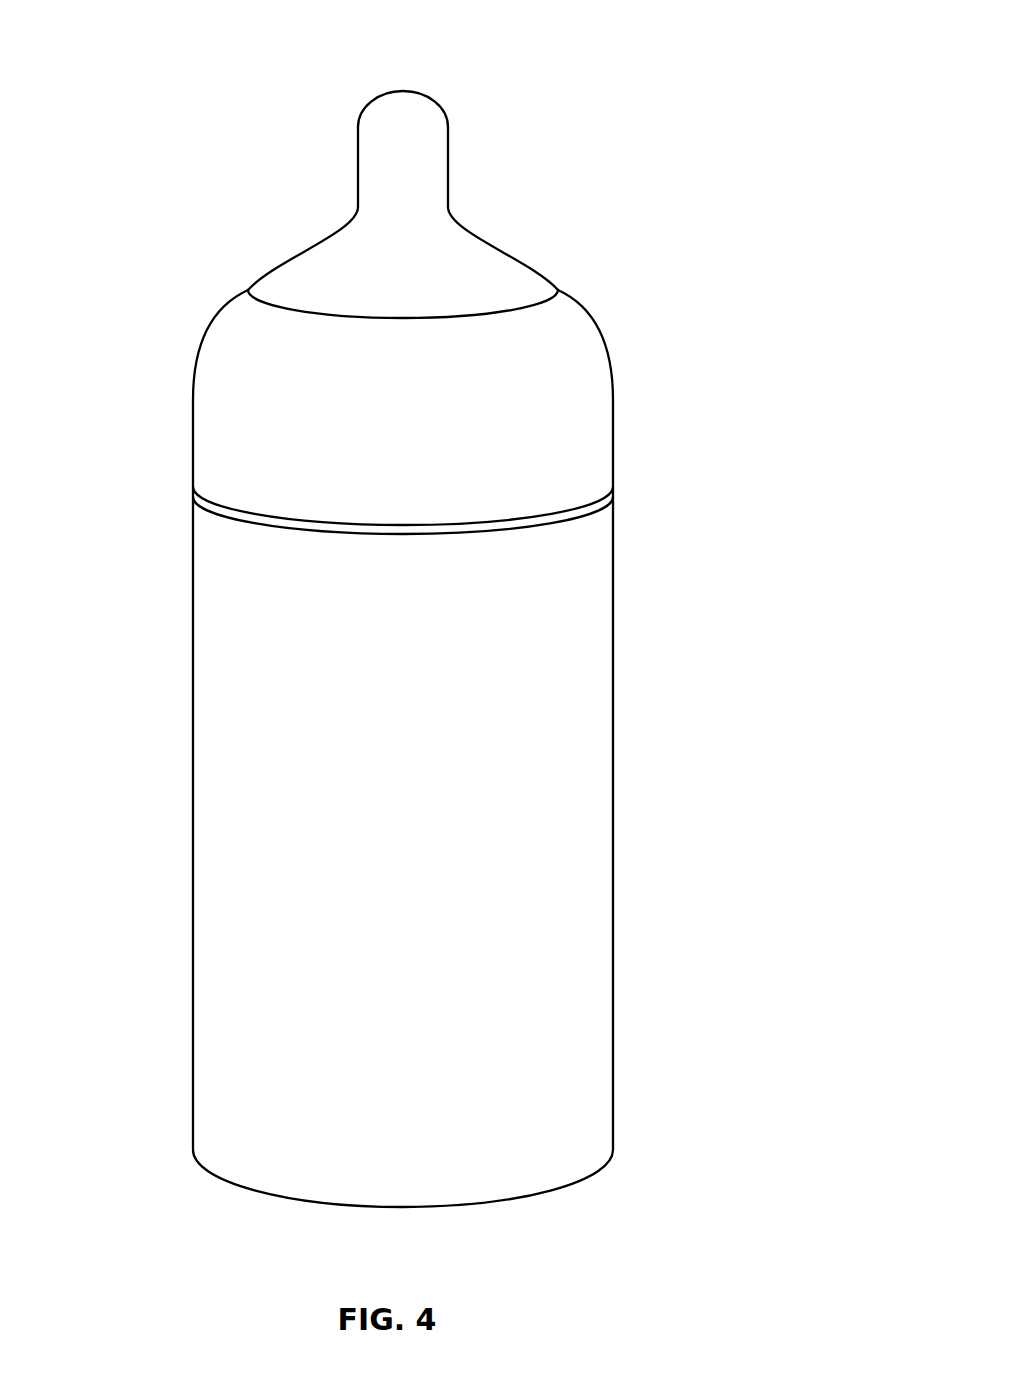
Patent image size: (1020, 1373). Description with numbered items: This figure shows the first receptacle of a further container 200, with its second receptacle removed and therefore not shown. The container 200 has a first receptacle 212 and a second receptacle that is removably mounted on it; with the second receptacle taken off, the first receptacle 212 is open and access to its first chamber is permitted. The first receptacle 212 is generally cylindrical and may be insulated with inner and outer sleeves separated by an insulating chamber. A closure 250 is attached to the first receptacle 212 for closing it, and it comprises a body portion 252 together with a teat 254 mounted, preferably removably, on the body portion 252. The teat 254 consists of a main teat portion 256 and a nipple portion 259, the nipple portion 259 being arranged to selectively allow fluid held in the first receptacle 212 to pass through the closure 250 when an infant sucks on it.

The container 200 is at (504, 748).
The first receptacle 212 is at (613, 748).
The closure 250 is at (365, 161).
The body portion 252 is at (613, 393).
The teat 254 is at (520, 258).
The main teat portion 256 is at (253, 285).
The nipple portion 259 is at (390, 88).